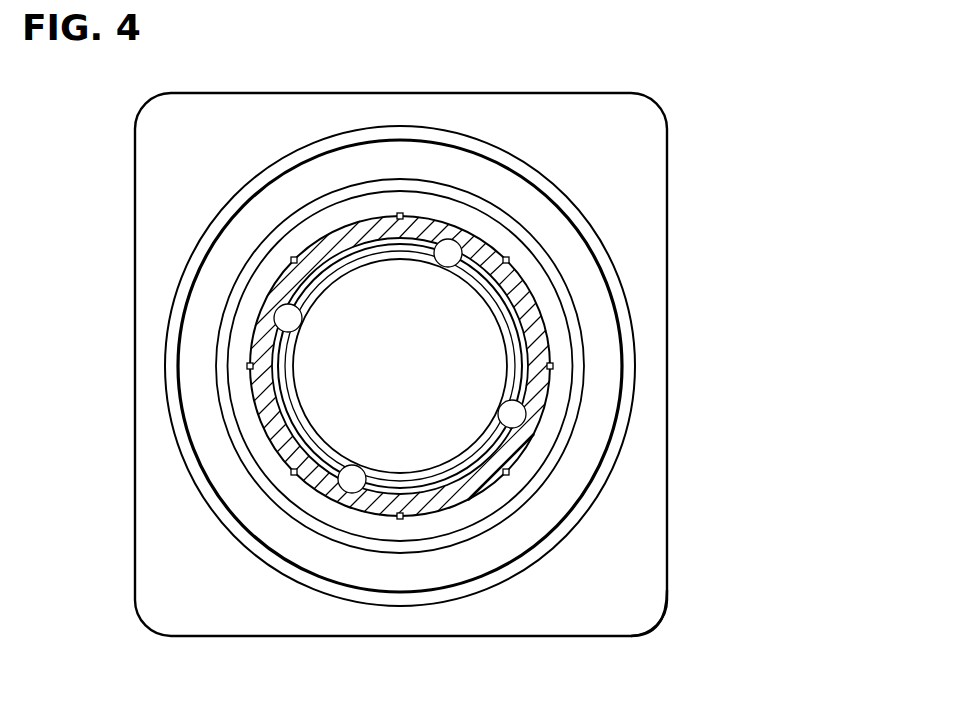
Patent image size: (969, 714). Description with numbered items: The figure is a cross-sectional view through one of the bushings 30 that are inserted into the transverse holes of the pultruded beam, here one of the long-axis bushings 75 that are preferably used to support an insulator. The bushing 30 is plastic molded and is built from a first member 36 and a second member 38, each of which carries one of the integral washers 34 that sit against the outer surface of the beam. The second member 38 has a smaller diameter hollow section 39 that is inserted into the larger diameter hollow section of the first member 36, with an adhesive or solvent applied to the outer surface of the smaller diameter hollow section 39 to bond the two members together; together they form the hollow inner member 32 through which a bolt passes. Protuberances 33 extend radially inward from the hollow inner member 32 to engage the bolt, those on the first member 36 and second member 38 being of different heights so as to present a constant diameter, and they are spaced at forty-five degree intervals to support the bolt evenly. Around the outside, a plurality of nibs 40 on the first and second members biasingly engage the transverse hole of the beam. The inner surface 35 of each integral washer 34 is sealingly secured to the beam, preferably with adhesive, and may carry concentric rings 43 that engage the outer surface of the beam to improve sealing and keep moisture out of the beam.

The bushing 30 is at (621, 93).
The hollow inner member 32 is at (484, 479).
The protuberances 33 is at (302, 318).
The integral washers 34 is at (646, 606).
The inner surface 35 is at (258, 524).
The first member 36 is at (508, 424).
The second member 38 is at (636, 222).
The smaller diameter hollow section 39 is at (518, 324).
The nibs 40 is at (398, 213).
The concentric rings 43 is at (204, 256).
The long-axis bushings 75 is at (626, 541).